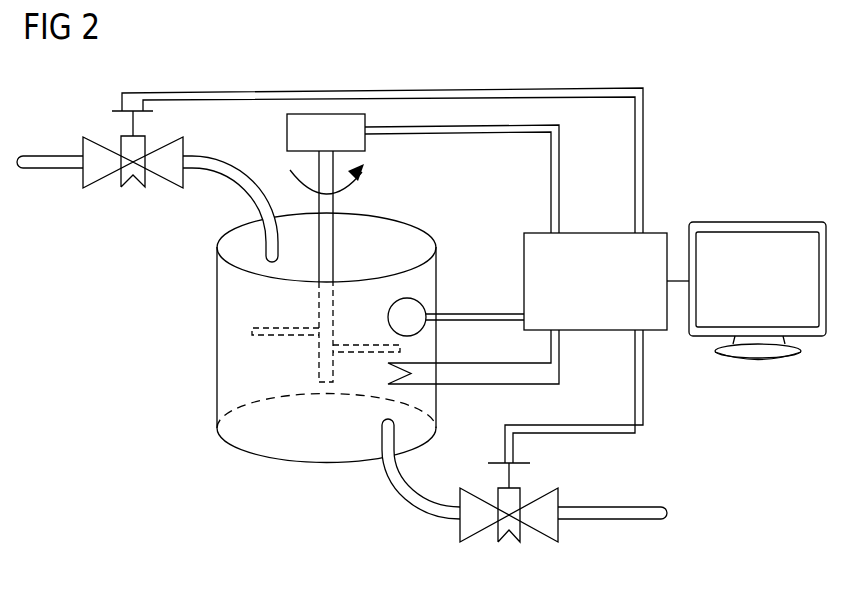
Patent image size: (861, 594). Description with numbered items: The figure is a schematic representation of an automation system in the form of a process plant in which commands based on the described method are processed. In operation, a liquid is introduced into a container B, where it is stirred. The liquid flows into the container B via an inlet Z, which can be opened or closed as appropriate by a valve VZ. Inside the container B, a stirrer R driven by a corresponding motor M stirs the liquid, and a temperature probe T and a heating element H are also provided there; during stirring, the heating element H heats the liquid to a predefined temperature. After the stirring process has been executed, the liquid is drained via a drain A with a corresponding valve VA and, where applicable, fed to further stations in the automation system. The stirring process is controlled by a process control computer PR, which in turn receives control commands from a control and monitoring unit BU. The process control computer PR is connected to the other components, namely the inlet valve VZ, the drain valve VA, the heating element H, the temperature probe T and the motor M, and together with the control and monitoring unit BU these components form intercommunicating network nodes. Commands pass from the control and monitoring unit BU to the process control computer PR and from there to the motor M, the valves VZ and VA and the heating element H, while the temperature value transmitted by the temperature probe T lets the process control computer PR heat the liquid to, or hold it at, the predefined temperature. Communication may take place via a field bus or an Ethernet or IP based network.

The inlet Z is at (50, 148).
The inlet valve VZ is at (133, 166).
The motor M is at (326, 132).
The stirrer R is at (399, 243).
The container B is at (217, 338).
The temperature probe T is at (407, 317).
The heating element H is at (473, 357).
The process control computer PR is at (595, 281).
The control and monitoring unit BU is at (758, 222).
The drain A is at (612, 499).
The drain valve VA is at (509, 520).